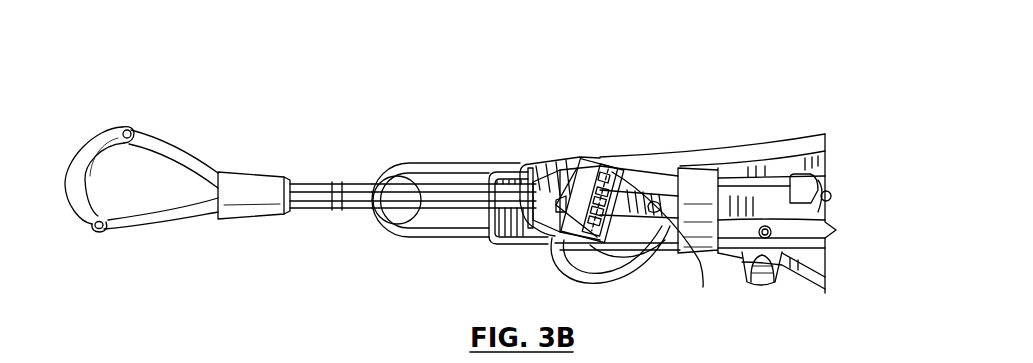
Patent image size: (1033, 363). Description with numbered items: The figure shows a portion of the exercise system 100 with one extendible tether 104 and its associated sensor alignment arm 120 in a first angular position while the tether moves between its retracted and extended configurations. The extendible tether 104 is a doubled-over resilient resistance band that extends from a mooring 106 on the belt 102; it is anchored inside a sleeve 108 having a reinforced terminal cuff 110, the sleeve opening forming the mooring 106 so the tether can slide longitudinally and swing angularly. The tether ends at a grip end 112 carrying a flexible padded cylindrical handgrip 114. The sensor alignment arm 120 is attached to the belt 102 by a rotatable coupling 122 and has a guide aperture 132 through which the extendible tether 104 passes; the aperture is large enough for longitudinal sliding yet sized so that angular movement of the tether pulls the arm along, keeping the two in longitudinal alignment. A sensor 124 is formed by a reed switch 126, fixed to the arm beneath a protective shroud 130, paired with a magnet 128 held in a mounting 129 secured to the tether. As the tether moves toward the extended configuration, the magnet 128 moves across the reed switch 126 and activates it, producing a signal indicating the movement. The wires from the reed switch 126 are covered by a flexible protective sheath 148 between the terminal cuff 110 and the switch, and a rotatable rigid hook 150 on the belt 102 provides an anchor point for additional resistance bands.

The exercise system 100 is at (190, 27).
The belt 102 is at (815, 142).
The extendible tether 104 is at (358, 194).
The mooring 106 is at (660, 262).
The sleeve 108 is at (743, 207).
The terminal cuff 110 is at (700, 176).
The grip end 112 is at (241, 232).
The handgrip 114 is at (103, 141).
The sensor alignment arm 120 is at (570, 170).
The rotatable coupling 122 is at (655, 203).
The sensor 124 is at (647, 283).
The reed switch 126 is at (600, 167).
The magnet 128 is at (607, 167).
The mounting 129 is at (669, 243).
The protective shroud 130 is at (580, 166).
The guide aperture 132 is at (510, 176).
The flexible protective sheath 148 is at (555, 256).
The hook 150 is at (802, 188).